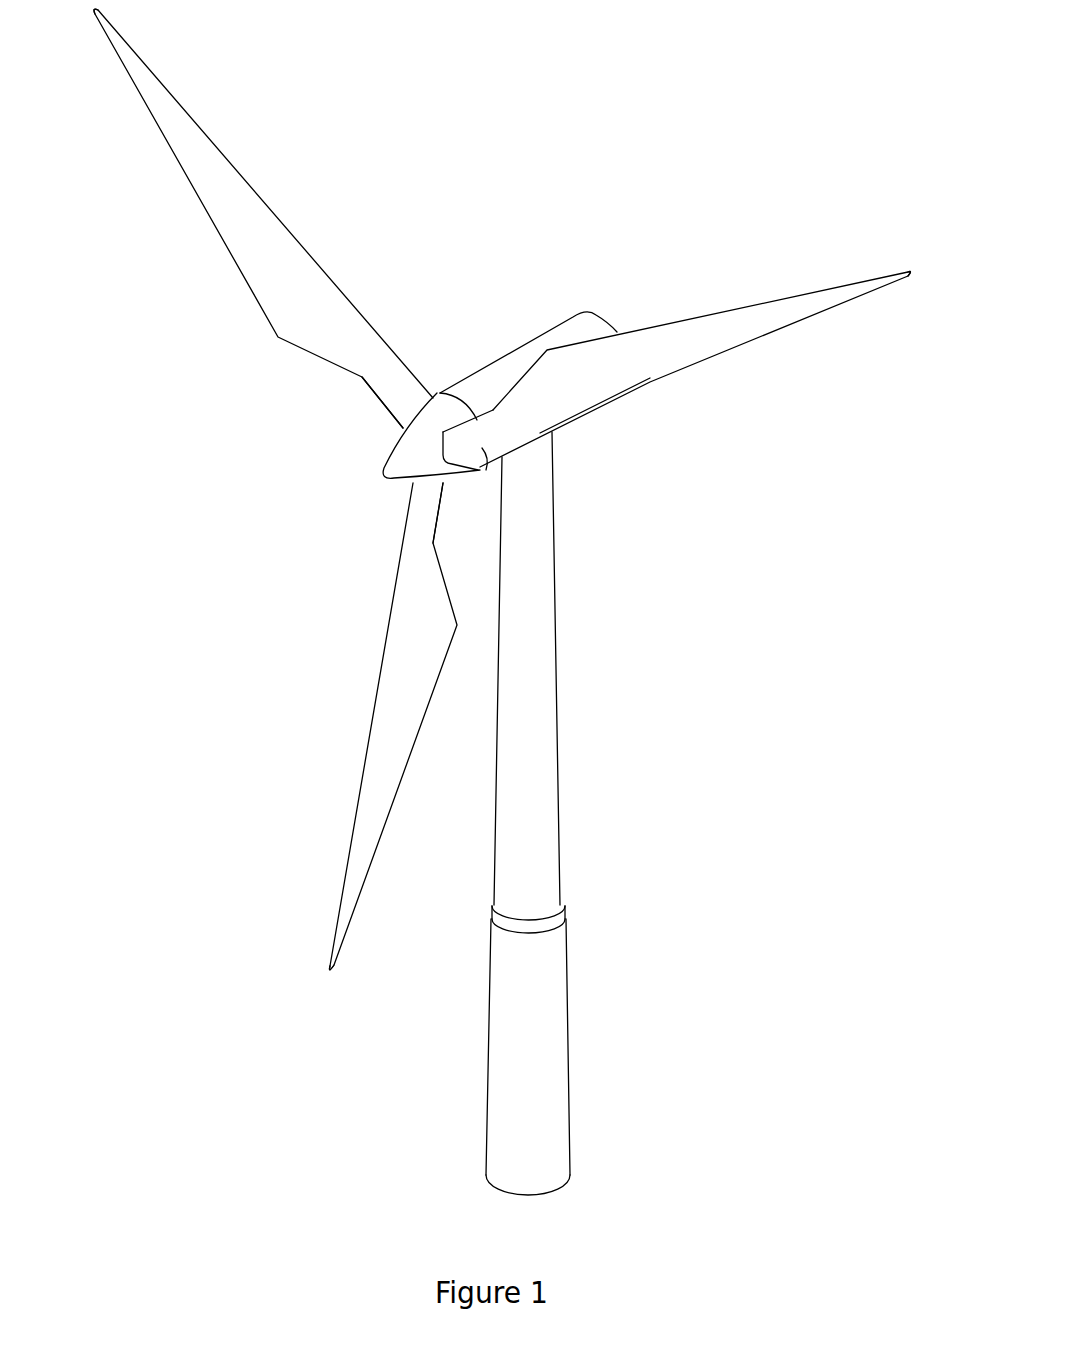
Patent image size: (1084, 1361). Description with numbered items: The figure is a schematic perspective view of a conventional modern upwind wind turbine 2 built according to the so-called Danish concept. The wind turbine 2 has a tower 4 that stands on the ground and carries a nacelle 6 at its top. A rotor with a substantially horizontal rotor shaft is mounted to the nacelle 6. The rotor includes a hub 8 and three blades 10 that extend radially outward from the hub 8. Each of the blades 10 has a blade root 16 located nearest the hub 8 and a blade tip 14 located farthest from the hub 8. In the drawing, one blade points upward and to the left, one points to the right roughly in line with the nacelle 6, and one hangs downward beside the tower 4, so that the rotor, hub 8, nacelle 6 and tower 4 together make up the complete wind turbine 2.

The wind turbine 2 is at (586, 772).
The tower 4 is at (550, 638).
The nacelle 6 is at (507, 363).
The hub 8 is at (382, 457).
The blades 10 is at (275, 293).
The blade tip 14 is at (128, 65).
The blade root 16 is at (402, 408).